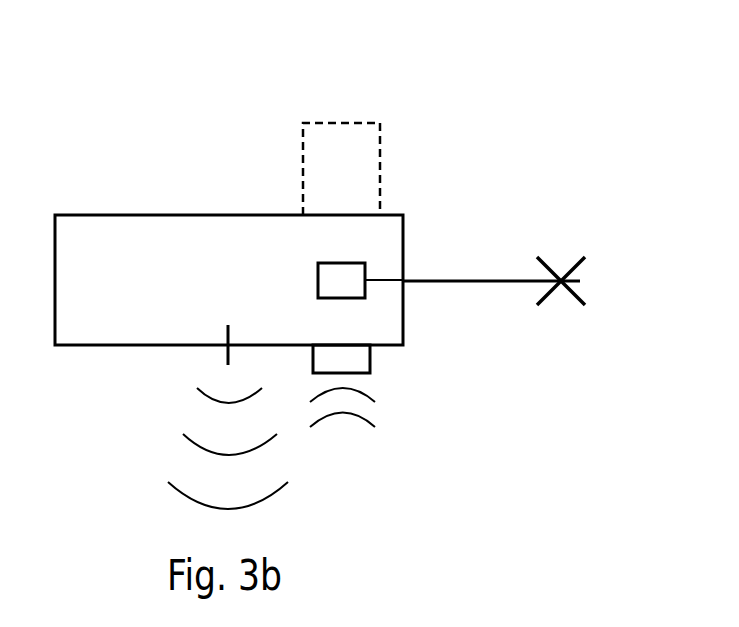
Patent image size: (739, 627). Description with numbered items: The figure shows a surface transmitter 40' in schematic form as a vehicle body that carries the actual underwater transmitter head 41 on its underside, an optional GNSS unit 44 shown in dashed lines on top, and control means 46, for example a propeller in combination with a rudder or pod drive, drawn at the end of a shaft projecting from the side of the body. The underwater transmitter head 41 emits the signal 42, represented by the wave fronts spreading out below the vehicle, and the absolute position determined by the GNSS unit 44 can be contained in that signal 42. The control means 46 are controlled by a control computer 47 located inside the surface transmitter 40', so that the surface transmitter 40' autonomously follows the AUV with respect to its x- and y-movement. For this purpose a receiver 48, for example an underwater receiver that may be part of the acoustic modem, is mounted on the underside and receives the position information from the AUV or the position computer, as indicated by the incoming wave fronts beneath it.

The surface transmitter 40' is at (229, 238).
The underwater transmitter head 41 is at (226, 357).
The signal 42 is at (191, 416).
The GNSS unit 44 is at (338, 123).
The control means 46 is at (573, 262).
The control computer 47 is at (375, 280).
The receiver 48 is at (370, 360).